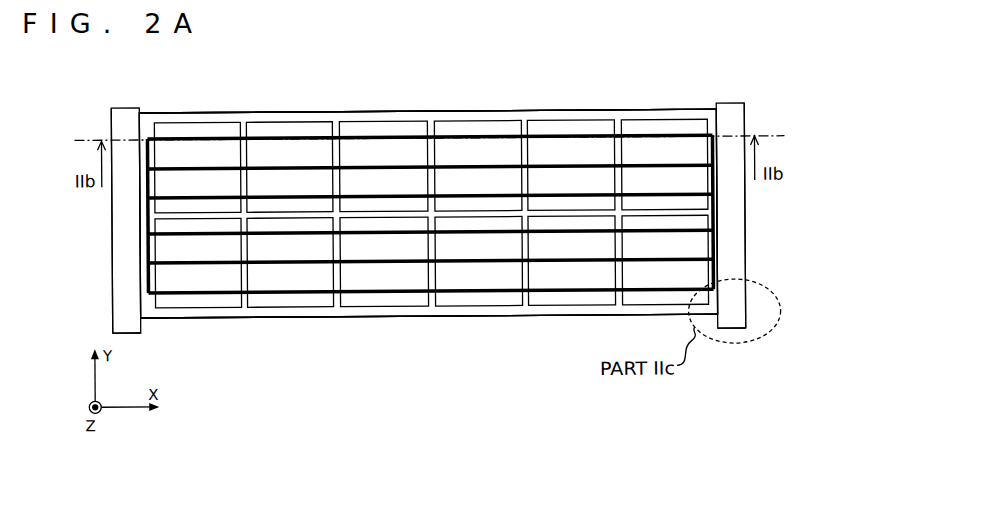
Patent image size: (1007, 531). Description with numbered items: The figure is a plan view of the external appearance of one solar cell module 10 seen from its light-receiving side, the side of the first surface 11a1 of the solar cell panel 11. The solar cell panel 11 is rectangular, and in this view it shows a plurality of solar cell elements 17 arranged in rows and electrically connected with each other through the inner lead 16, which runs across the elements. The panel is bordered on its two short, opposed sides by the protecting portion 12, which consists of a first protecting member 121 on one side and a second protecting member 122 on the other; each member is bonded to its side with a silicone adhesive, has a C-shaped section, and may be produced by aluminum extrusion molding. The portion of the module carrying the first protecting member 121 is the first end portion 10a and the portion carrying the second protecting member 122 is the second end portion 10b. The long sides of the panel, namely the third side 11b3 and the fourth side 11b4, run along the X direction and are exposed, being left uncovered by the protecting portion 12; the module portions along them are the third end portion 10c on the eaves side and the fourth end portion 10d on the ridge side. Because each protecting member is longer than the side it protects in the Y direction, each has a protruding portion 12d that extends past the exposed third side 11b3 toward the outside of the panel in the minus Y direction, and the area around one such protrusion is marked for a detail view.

The solar cell module 10 is at (540, 341).
The first end portion 10a is at (748, 217).
The second end portion 10b is at (112, 213).
The third end portion 10c is at (431, 320).
The fourth end portion 10d is at (378, 112).
The solar cell panel 11 is at (257, 118).
The first surface 11a1 is at (480, 117).
The third side 11b3 is at (429, 316).
The fourth side 11b4 is at (427, 111).
The protecting portion 12 is at (430, 197).
The first protecting member 121 is at (730, 215).
The second protecting member 122 is at (125, 220).
The protruding portion 12d is at (471, 352).
The inner lead 16 is at (597, 137).
The solar cell element 17 is at (542, 127).